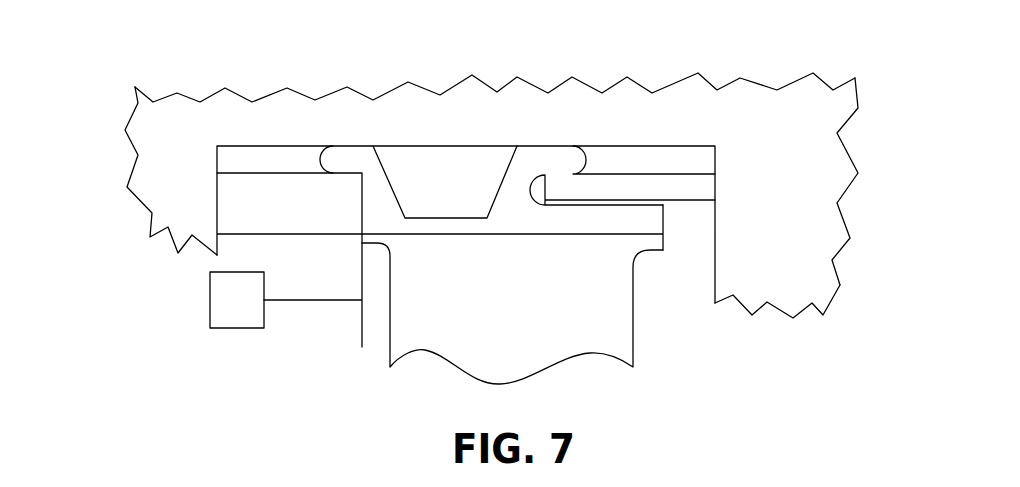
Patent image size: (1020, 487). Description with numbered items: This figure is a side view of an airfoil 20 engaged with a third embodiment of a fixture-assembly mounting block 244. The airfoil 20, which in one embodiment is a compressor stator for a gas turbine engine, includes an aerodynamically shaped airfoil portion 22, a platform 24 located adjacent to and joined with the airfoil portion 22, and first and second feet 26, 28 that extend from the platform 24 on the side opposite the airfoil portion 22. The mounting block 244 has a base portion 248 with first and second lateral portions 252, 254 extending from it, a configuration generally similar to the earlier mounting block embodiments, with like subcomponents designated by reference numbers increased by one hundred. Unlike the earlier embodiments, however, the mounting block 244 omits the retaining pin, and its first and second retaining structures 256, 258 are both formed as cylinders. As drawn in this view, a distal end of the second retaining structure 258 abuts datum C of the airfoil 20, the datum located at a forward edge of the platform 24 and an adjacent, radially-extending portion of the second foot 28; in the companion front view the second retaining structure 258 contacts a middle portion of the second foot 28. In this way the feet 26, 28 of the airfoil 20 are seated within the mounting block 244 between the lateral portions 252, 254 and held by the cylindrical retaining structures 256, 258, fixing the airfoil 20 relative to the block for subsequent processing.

The airfoil 20 is at (606, 315).
The airfoil portion 22 is at (494, 305).
The platform 24 is at (435, 230).
The first foot 26 is at (555, 153).
The second foot 28 is at (335, 155).
The mounting block 244 is at (816, 346).
The base portion 248 is at (688, 97).
The first lateral portion 252 is at (822, 200).
The second lateral portion 254 is at (160, 163).
The first retaining structure 256 is at (690, 183).
The second retaining structure 258 is at (292, 212).